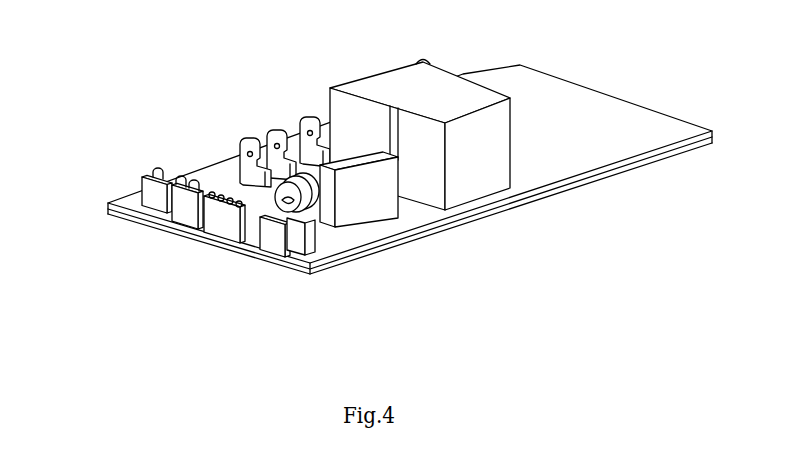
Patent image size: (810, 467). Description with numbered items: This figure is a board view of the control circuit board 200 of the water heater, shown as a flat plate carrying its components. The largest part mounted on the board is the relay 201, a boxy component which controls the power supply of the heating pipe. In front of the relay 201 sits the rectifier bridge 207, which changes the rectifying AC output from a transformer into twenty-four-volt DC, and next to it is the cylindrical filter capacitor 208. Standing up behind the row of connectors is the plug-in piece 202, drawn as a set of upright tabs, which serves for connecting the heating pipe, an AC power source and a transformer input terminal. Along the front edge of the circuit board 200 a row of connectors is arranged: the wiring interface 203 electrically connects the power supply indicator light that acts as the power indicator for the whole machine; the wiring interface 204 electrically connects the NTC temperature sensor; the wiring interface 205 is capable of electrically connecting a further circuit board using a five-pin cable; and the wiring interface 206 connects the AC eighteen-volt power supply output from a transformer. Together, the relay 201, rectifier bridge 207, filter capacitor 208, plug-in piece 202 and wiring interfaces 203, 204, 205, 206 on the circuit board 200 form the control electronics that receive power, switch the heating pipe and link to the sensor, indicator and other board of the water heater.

The circuit board 200 is at (602, 112).
The relay 201 is at (493, 170).
The plug-in piece 202 is at (292, 116).
The wiring interface 203 is at (152, 197).
The wiring interface 204 is at (185, 208).
The wiring interface 205 is at (227, 220).
The wiring interface 206 is at (273, 240).
The rectifier bridge 207 is at (372, 210).
The filter capacitor 208 is at (310, 212).